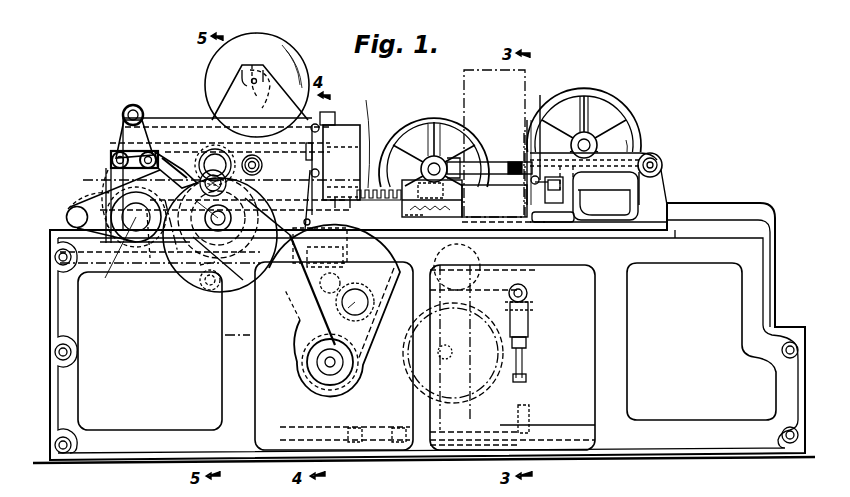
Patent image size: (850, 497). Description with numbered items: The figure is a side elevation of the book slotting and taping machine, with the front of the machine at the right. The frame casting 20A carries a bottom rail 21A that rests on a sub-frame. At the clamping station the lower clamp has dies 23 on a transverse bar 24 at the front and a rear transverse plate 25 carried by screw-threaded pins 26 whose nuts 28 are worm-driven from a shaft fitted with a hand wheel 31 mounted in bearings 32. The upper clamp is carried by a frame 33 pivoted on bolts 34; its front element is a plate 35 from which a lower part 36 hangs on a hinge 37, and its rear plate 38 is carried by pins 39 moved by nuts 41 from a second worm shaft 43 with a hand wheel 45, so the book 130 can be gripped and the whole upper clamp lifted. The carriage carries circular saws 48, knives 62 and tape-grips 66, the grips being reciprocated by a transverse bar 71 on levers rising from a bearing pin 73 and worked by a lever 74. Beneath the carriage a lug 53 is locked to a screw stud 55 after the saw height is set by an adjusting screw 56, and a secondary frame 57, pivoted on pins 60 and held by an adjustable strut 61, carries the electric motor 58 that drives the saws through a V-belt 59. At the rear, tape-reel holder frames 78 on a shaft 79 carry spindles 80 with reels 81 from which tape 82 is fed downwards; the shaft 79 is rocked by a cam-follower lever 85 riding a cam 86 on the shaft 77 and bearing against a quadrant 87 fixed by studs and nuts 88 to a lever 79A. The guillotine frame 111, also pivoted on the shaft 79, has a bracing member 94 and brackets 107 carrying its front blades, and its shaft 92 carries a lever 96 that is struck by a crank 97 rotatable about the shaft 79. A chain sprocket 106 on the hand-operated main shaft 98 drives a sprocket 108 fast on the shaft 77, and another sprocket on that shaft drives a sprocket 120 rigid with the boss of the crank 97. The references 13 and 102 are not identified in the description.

The frame casting 20A is at (683, 240).
The bottom rail 21A is at (614, 461).
The tape-reel holder frame 78 is at (218, 118).
The reel of tape 81 is at (212, 70).
The transverse spindle 80 is at (260, 92).
The transverse shaft 92 is at (222, 148).
The transverse bracing member 94 is at (142, 106).
The guillotine frame 111 is at (120, 138).
The studs and nuts 88 is at (135, 155).
The quadrant 87 is at (160, 155).
The cam-follower lever 85 is at (108, 172).
The transverse shaft 79 is at (135, 238).
The crank 97 is at (70, 212).
The lever 79A is at (112, 178).
The sprocket 120 is at (106, 198).
The tape 82 is at (322, 112).
The bracket 107 is at (341, 114).
The knife 62 is at (318, 195).
The nut 28 is at (375, 188).
The screw-threaded pin 26 is at (375, 135).
The circular saw 48 is at (410, 216).
The transverse bar 71 is at (386, 218).
The hand wheel 31 is at (434, 134).
The bearing 32 is at (434, 122).
The transverse plate 38 is at (462, 160).
The screw-threaded pin 39 is at (516, 156).
The transverse plate 35 is at (527, 134).
The transverse horizontal hinge 37 is at (540, 95).
The book 130 is at (485, 70).
The transverse plate 25 is at (503, 203).
The lower part 36 is at (524, 206).
The die 23 is at (556, 212).
The transverse bar 24 is at (592, 192).
The nut 41 is at (598, 114).
The second operating worm shaft 43 is at (588, 96).
The hand wheel 45 is at (640, 125).
The upper clamp frame 33 is at (640, 145).
The bolt 34 is at (664, 163).
The cam 86 is at (178, 277).
The tape-grip 66 is at (248, 218).
The lever 96 is at (173, 268).
The shaft 77 is at (172, 287).
The sprocket 108 is at (212, 312).
The axis 102 is at (250, 335).
The lever 74 is at (296, 348).
The main shaft 98 is at (300, 383).
The chain sprocket 106 is at (316, 404).
The gear 13 is at (335, 300).
The bearing pin 73 is at (320, 247).
The pin 60 is at (345, 436).
The V-belt 59 is at (492, 262).
The transverse screw stud 55 is at (527, 293).
The lug 53 is at (530, 318).
The adjusting screw 56 is at (523, 366).
The electric driving motor 58 is at (520, 390).
The adjustable strut 61 is at (531, 410).
The secondary frame 57 is at (520, 442).